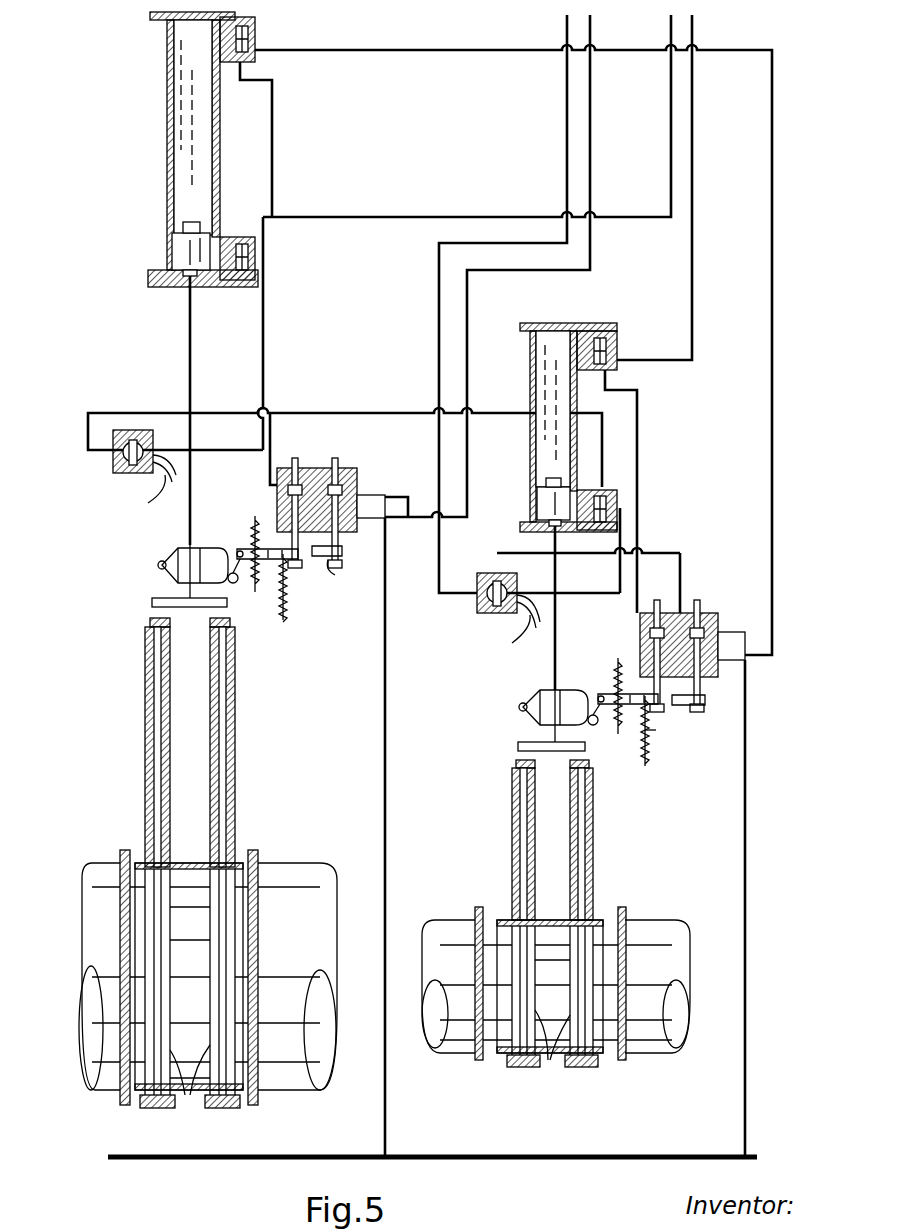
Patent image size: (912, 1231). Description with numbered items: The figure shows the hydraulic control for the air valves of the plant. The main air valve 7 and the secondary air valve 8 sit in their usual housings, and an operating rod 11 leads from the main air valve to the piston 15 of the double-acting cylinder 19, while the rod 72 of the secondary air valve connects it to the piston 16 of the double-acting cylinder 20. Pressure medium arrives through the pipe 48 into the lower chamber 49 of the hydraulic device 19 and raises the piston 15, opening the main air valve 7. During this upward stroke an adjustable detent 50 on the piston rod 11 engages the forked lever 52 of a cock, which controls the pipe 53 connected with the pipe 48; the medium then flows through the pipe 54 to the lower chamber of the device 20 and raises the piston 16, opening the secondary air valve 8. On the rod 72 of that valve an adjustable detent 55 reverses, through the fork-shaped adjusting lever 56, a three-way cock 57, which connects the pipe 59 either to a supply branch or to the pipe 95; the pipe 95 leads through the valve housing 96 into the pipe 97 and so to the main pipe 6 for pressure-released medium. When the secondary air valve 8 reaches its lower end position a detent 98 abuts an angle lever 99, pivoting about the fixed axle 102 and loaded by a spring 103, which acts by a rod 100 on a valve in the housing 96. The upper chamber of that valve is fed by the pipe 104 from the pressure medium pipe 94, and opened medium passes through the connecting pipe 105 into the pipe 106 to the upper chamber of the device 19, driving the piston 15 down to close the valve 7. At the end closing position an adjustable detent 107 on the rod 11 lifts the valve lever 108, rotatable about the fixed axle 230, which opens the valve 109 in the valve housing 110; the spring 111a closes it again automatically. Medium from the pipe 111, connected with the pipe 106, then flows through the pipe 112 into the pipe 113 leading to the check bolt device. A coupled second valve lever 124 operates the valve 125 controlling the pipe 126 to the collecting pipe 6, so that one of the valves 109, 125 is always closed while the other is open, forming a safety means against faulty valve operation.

The pipe 6 is at (455, 1156).
The main air valve 7 is at (185, 1090).
The secondary air valve 8 is at (546, 1060).
The operating rod 11 is at (192, 380).
The piston 15 is at (172, 243).
The piston 16 is at (537, 498).
The cylinder 19 is at (167, 150).
The cylinder 20 is at (533, 450).
The pressure medium pipe 48 is at (669, 108).
The lower chamber 49 is at (170, 290).
The adjustable detent 50 is at (228, 556).
The forked lever 52 is at (151, 505).
The pipe 53 is at (263, 338).
The pipe 54 is at (318, 413).
The adjustable detent 55 is at (596, 705).
The fork-shaped adjusting lever 56 is at (517, 644).
The three-way cock 57 is at (125, 473).
The pipe 59 is at (567, 147).
The piston rod of second cylinder 72 is at (557, 630).
The pressure medium pipe 94 is at (694, 82).
The pipe 95 is at (682, 575).
The valve housing 96 is at (699, 657).
The pipe 97 is at (747, 787).
The detent 98 is at (568, 690).
The angle lever 99 is at (651, 730).
The rod 100 is at (690, 706).
The fixed axle 102 is at (603, 715).
The spring 103 is at (650, 746).
The pipe 104 is at (638, 440).
The connecting pipe 105 is at (640, 672).
The pipe 106 is at (413, 52).
The adjustable detent 107 is at (205, 547).
The valve lever 108 is at (272, 548).
The valve 109 is at (298, 468).
The valve housing 110 is at (343, 511).
The pipe 111 is at (273, 132).
The spring 111a is at (289, 588).
The pipe 112 is at (342, 546).
The pipe 113 is at (592, 84).
The second valve lever 124 is at (336, 566).
The valve 125 is at (386, 497).
The pipe 126 is at (386, 700).
The fixed axle 230 is at (238, 583).